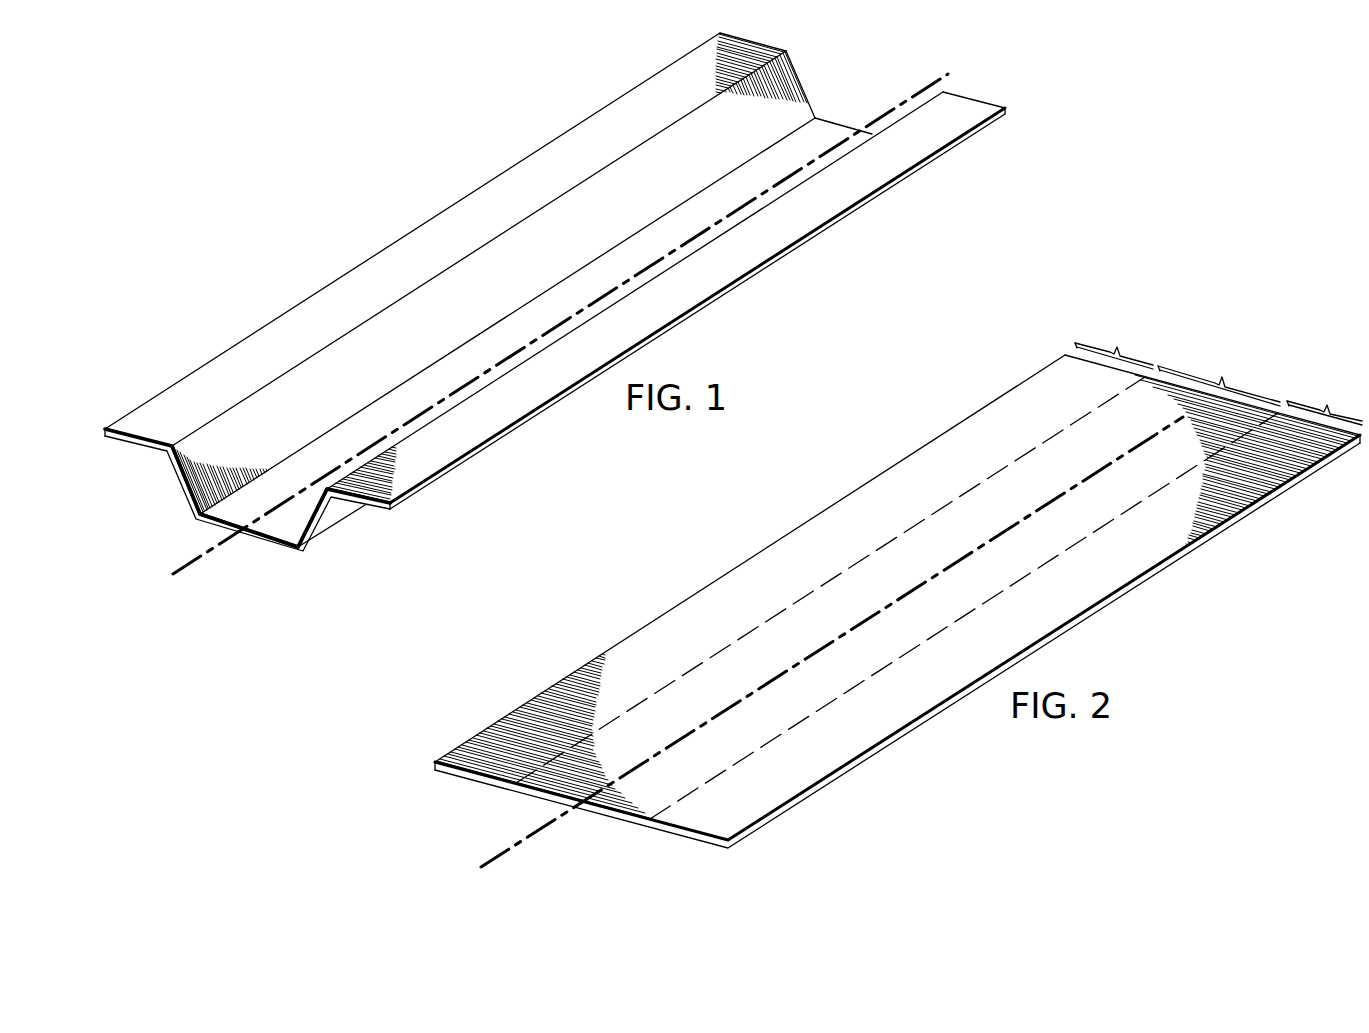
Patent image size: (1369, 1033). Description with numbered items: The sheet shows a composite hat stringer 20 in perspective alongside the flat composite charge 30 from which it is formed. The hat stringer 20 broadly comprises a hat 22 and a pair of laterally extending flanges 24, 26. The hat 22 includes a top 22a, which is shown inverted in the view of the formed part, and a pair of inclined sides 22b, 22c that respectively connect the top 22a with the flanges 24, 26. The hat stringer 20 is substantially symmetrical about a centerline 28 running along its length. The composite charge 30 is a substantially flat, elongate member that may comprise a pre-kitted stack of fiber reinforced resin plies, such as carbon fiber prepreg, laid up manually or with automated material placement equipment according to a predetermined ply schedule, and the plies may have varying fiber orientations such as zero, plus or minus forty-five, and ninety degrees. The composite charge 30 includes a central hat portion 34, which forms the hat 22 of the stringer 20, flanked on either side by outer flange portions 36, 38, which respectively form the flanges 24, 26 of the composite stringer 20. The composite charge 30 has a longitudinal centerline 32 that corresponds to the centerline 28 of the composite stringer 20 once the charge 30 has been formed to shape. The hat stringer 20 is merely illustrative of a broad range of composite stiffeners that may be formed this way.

In FIG. 1, the hat stringer 20 is at (376, 201).
In FIG. 1, the hat 22 is at (288, 527).
In FIG. 1, the top 22a is at (206, 526).
In FIG. 1, the inclined side 22b is at (174, 471).
In FIG. 1, the inclined side 22c is at (318, 513).
In FIG. 1, the flange 24 is at (260, 347).
In FIG. 1, the flange 26 is at (445, 455).
In FIG. 1, the centerline 28 is at (191, 572).
In FIG. 2, the composite charge 30 is at (740, 539).
In FIG. 2, the longitudinal centerline 32 is at (498, 853).
In FIG. 2, the central hat portion 34 is at (1219, 376).
In FIG. 2, the outer flange portion 36 is at (795, 567).
In FIG. 2, the outer flange portion 38 is at (1248, 459).